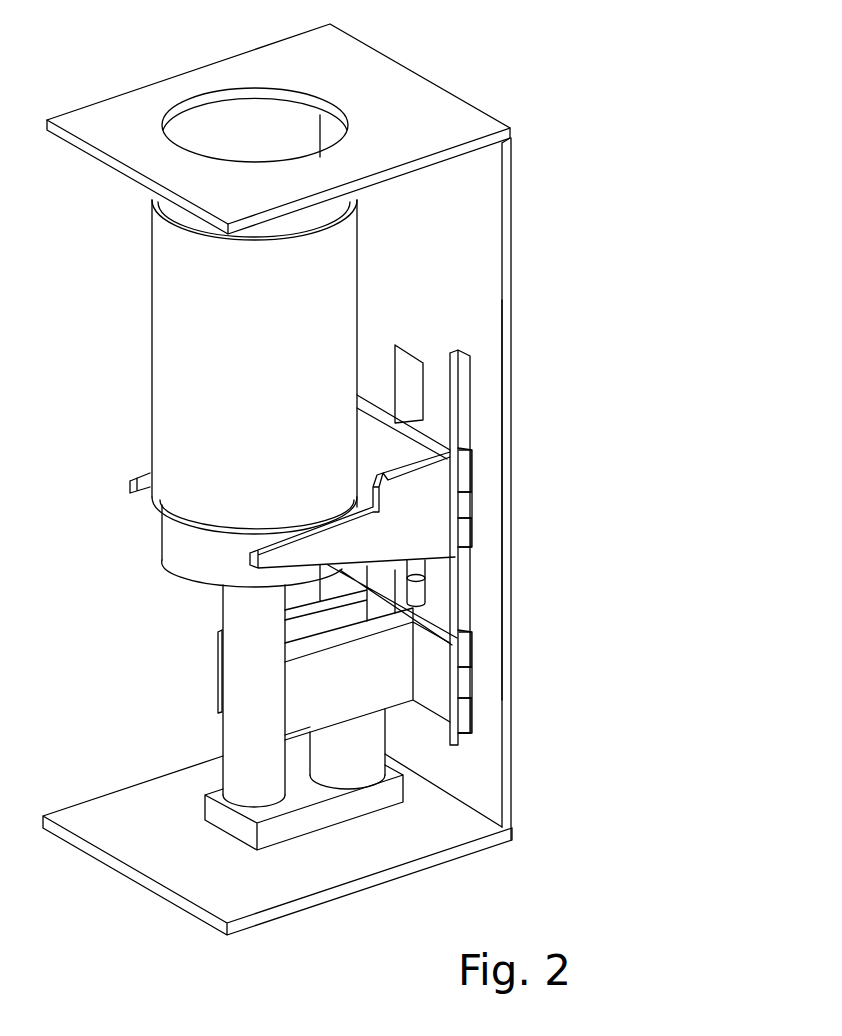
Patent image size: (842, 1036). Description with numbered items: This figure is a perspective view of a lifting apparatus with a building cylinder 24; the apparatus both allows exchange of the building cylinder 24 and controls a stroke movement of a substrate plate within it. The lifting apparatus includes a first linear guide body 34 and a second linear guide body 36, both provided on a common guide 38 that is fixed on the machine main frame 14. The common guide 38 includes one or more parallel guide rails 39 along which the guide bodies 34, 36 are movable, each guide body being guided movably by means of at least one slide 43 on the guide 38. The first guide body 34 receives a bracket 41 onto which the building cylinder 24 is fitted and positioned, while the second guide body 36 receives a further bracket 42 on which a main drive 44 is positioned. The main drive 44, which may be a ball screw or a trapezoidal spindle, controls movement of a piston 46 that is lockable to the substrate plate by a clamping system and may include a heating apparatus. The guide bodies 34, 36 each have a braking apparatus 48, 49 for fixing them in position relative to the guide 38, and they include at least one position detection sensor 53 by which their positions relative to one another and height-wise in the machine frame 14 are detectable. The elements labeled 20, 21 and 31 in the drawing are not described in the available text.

The machine main frame 14 is at (543, 251).
The top plate 20 is at (456, 108).
The top surface of plate 21 is at (409, 99).
The building cylinder 24 is at (175, 332).
The support panel 31 is at (560, 495).
The first guide body 34 is at (492, 419).
The second guide body 36 is at (500, 597).
The guide 38 is at (492, 367).
The guide rail 39 is at (458, 352).
The bracket 41 is at (425, 510).
The further bracket 42 is at (388, 680).
The slide 43 is at (468, 492).
The main drive 44 is at (240, 735).
The piston 46 is at (183, 553).
The braking apparatus 48 is at (468, 466).
The braking apparatus 49 is at (468, 650).
The position detection sensor 53 is at (470, 530).